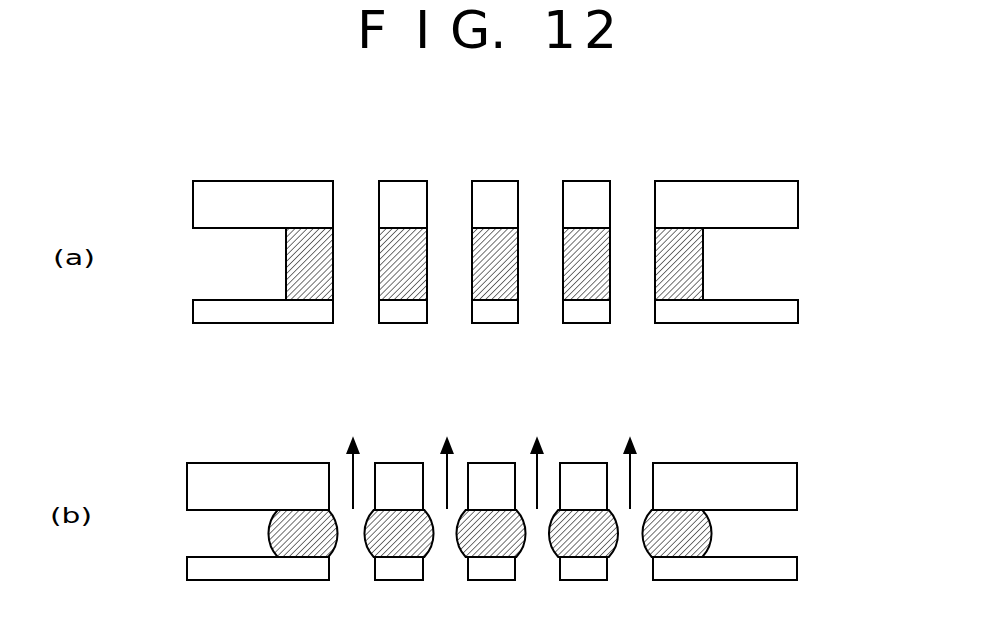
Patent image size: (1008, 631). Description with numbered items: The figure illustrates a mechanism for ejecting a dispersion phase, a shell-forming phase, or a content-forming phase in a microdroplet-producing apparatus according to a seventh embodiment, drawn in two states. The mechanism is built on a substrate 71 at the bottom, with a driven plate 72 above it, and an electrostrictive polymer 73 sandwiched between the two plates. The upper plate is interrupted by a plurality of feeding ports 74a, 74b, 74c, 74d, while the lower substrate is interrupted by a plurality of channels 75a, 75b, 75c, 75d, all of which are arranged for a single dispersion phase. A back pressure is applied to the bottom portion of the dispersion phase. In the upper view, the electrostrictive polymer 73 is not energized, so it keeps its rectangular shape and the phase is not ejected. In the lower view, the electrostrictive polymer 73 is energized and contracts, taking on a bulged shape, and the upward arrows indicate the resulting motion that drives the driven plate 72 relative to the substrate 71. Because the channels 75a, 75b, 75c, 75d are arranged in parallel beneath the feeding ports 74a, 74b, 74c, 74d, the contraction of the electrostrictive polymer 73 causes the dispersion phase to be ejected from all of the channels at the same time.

The substrate 71 is at (798, 307).
The driven plate 72 is at (798, 188).
The electrostrictive polymer 73 is at (703, 253).
The feeding port 74a is at (357, 205).
The feeding port 74b is at (451, 205).
The feeding port 74c is at (540, 205).
The feeding port 74d is at (633, 205).
The channel 75a is at (357, 285).
The channel 75b is at (451, 285).
The channel 75c is at (539, 285).
The channel 75d is at (632, 285).